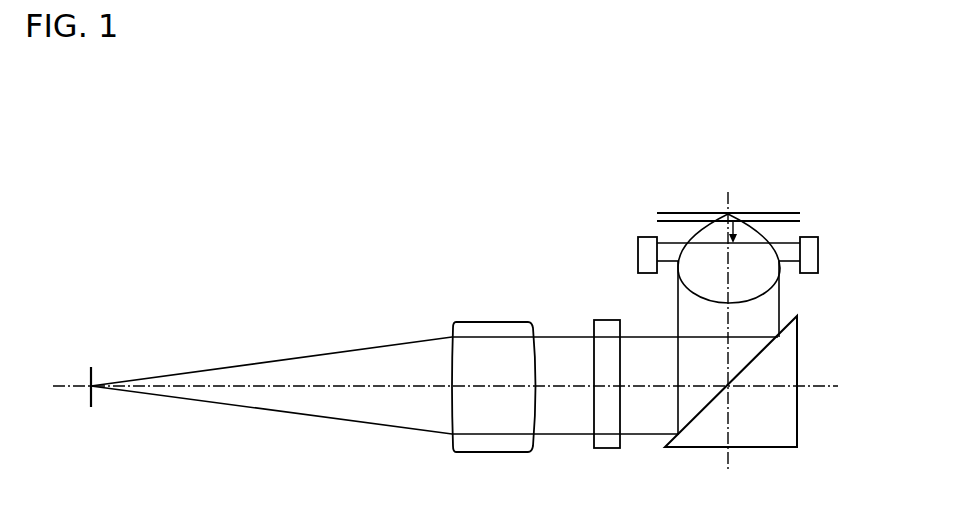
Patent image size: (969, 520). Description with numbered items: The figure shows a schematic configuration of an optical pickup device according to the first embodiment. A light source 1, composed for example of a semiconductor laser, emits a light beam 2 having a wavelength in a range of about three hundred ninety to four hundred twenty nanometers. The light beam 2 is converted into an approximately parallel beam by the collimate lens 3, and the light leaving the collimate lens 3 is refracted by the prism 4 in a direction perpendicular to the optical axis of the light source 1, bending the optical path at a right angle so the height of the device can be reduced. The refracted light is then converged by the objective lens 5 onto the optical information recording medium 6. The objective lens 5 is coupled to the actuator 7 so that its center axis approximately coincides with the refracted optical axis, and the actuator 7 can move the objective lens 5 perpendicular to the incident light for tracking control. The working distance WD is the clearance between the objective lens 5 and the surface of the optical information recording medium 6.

The light source 1 is at (87, 366).
The light beam 2 is at (277, 360).
The collimate lens 3 is at (490, 322).
The prism 4 is at (798, 418).
The objective lens 5 is at (667, 243).
The optical information recording medium 6 is at (773, 212).
The actuator 7 is at (819, 253).
The working distance WD is at (739, 230).